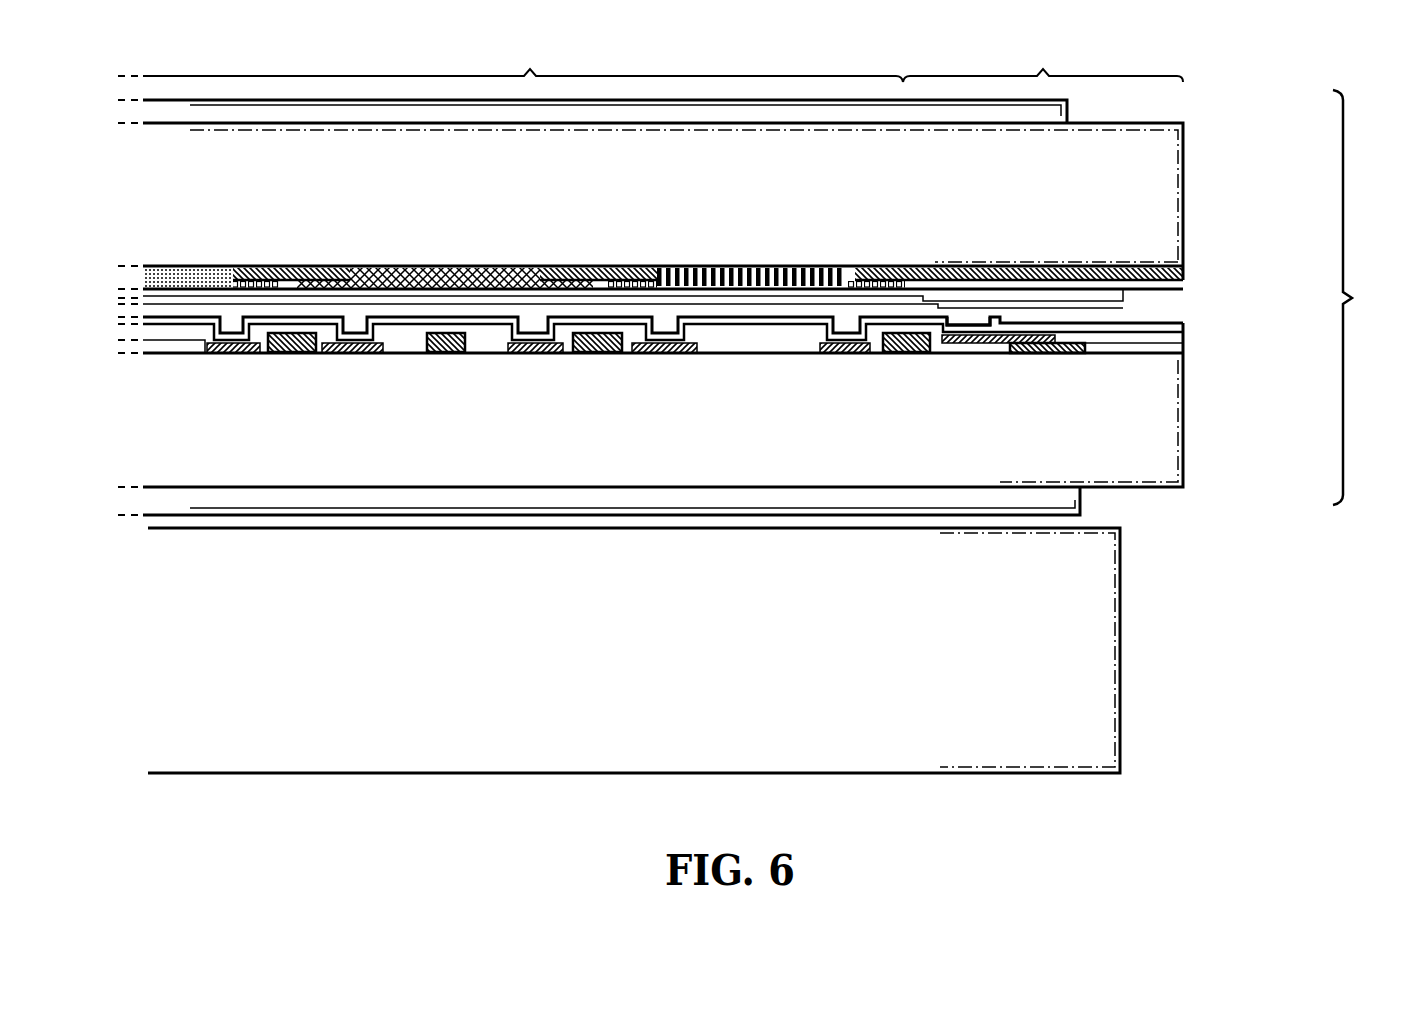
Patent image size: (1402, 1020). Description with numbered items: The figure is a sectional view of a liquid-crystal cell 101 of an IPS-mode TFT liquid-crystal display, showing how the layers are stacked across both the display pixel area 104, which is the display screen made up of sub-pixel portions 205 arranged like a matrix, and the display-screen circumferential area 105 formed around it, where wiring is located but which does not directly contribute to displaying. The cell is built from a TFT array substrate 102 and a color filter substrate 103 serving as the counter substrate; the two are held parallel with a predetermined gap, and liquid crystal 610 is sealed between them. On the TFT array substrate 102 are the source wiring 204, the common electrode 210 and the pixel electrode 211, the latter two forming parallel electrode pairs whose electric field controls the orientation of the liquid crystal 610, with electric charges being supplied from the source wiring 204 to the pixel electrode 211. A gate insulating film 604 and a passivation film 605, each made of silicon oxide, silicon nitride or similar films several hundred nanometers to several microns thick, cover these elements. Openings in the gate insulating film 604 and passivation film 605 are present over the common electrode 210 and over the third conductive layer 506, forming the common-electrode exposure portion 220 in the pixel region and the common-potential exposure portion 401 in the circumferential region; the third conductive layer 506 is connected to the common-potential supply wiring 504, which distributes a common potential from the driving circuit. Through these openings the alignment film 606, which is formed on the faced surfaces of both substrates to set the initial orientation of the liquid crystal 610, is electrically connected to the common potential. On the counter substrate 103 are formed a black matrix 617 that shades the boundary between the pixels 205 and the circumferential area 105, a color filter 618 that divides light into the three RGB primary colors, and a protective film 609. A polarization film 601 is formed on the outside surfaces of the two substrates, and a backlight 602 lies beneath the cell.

The liquid-crystal cell 101 is at (1359, 297).
The TFT array substrate 102 is at (1173, 453).
The color filter substrate 103 is at (1172, 160).
The display pixel area 104 is at (523, 59).
The display-screen circumferential area 105 is at (1043, 59).
The source wiring 204 is at (287, 357).
The sub-pixel portion 205 is at (940, 376).
The common electrode 210 is at (355, 357).
The pixel electrode 211 is at (440, 357).
The common-electrode exposure portion 220 is at (539, 323).
The common-potential exposure portion 401 is at (967, 320).
The common-potential supply wiring 504 is at (1090, 343).
The third conductive layer 506 is at (993, 350).
The polarization film 601 is at (1057, 113).
The backlight 602 is at (1103, 697).
The gate insulating film 604 is at (1183, 347).
The passivation film 605 is at (1183, 330).
The alignment film 606 is at (172, 298).
The protective film 609 is at (1180, 287).
The liquid crystal 610 is at (1125, 310).
The black matrix 617 is at (1157, 263).
The color filter 618 is at (195, 267).